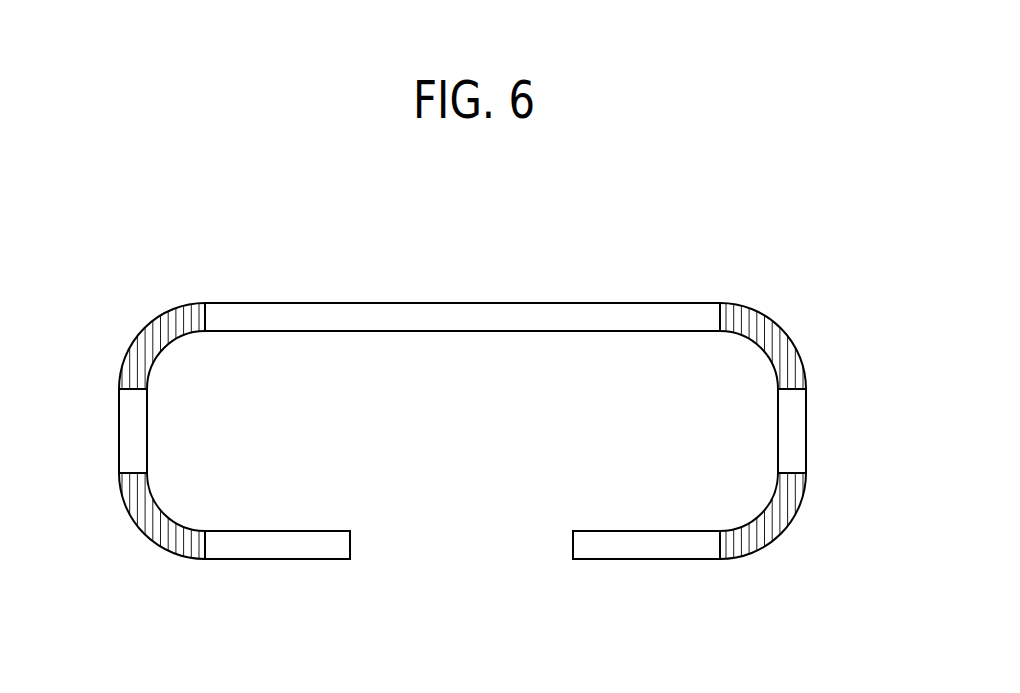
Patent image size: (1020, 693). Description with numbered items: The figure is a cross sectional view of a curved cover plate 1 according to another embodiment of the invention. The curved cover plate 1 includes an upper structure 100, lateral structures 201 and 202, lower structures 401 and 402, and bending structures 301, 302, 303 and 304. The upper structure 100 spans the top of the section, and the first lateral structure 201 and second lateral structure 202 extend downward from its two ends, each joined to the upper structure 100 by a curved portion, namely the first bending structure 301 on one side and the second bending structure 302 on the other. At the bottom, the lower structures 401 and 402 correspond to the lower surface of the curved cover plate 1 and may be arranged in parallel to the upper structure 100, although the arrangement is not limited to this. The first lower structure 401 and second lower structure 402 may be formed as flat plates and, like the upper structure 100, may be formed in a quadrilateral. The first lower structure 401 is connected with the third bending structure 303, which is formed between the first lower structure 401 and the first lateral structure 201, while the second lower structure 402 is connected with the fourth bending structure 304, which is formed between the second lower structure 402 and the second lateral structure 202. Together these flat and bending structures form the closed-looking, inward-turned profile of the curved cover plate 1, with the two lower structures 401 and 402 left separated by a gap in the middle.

The curved cover plate 1 is at (765, 270).
The upper structure 100 is at (460, 316).
The first lateral structure 201 is at (800, 430).
The second lateral structure 202 is at (125, 430).
The first bending structure 301 is at (777, 332).
The second bending structure 302 is at (145, 326).
The third bending structure 303 is at (777, 528).
The fourth bending structure 304 is at (148, 527).
The first lower structure 401 is at (650, 552).
The second lower structure 402 is at (272, 552).